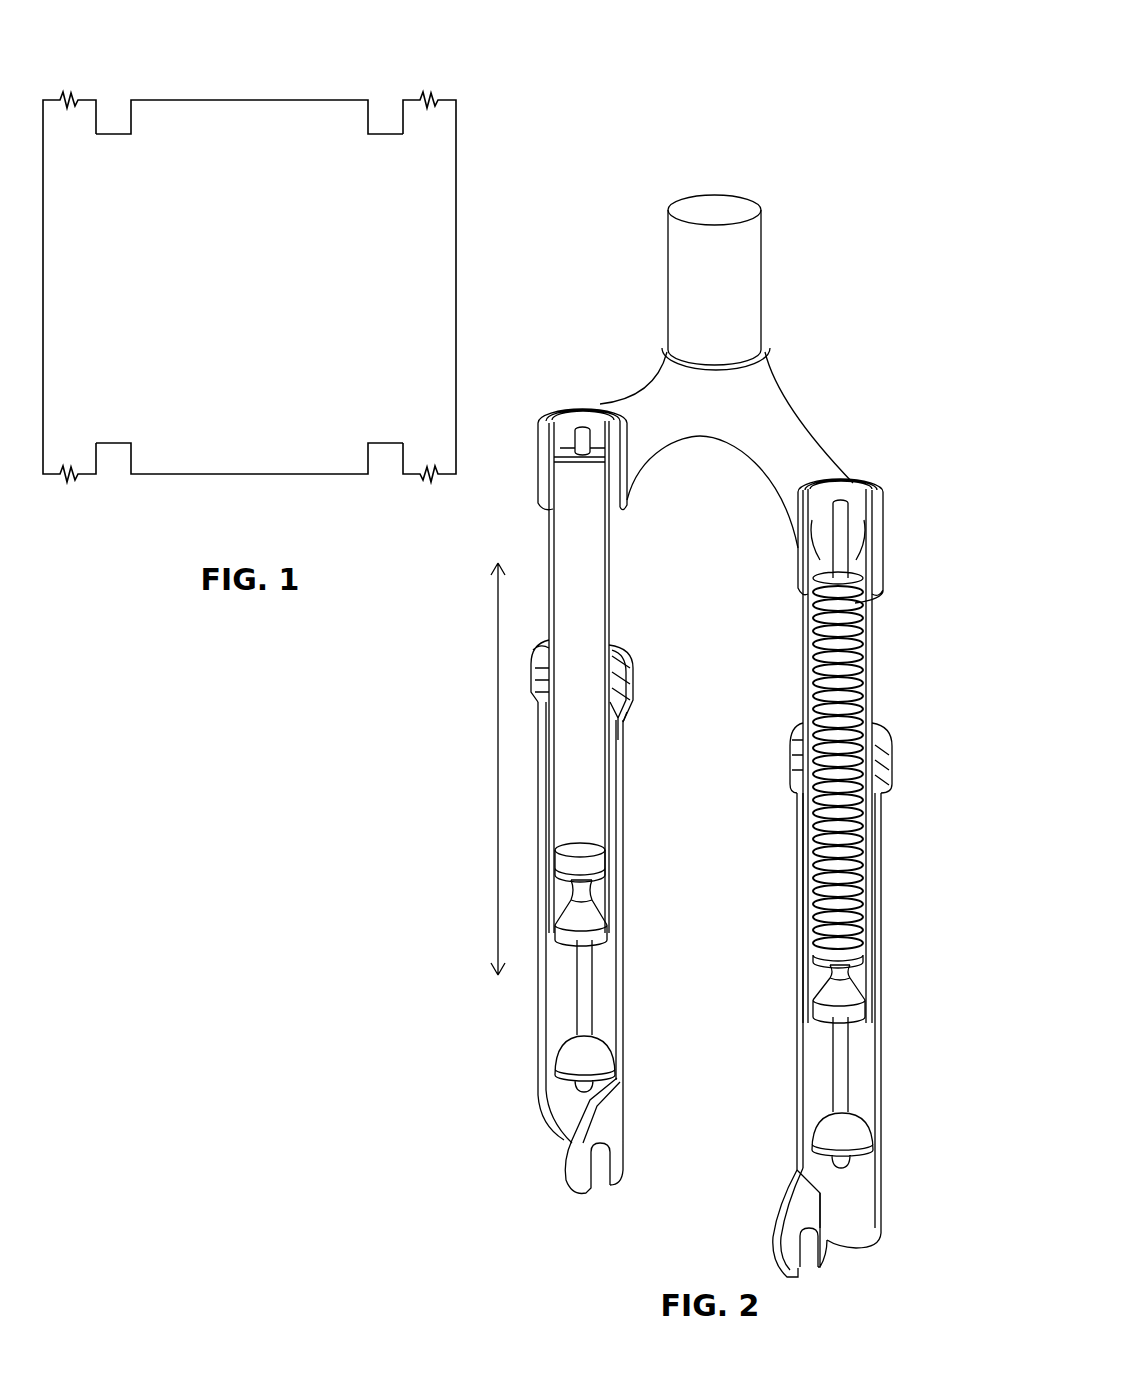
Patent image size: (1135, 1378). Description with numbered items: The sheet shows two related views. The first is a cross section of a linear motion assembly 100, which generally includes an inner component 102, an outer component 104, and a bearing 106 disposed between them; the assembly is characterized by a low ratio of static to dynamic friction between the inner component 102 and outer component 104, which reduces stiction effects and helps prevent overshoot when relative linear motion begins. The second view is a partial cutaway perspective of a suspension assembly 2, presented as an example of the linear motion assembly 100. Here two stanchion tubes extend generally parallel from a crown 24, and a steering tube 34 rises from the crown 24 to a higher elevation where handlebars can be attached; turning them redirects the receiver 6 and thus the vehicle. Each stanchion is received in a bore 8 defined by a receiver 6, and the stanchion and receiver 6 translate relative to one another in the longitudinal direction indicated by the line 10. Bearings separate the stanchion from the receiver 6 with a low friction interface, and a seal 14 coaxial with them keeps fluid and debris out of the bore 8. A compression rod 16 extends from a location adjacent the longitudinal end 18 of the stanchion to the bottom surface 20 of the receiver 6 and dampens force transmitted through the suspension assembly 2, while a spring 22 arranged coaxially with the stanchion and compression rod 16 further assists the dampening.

In FIG. 1, the linear motion assembly 100 is at (275, 276).
In FIG. 1, the inner component 102 is at (183, 476).
In FIG. 1, the outer component 104 is at (440, 99).
In FIG. 1, the bearing 106 is at (121, 133).
In FIG. 2, the suspension assembly 2 is at (685, 704).
In FIG. 2, the steering tube 34 is at (762, 268).
In FIG. 2, the crown 24 is at (818, 422).
In FIG. 2, the receiver 6 is at (882, 1078).
In FIG. 2, the bore 8 is at (569, 745).
In FIG. 2, the longitudinal direction line 10 is at (495, 765).
In FIG. 2, the seal 14 is at (624, 688).
In FIG. 2, the compression rod 16 is at (852, 1131).
In FIG. 2, the longitudinal end 18 is at (607, 934).
In FIG. 2, the bottom surface 20 is at (857, 1241).
In FIG. 2, the spring 22 is at (856, 676).